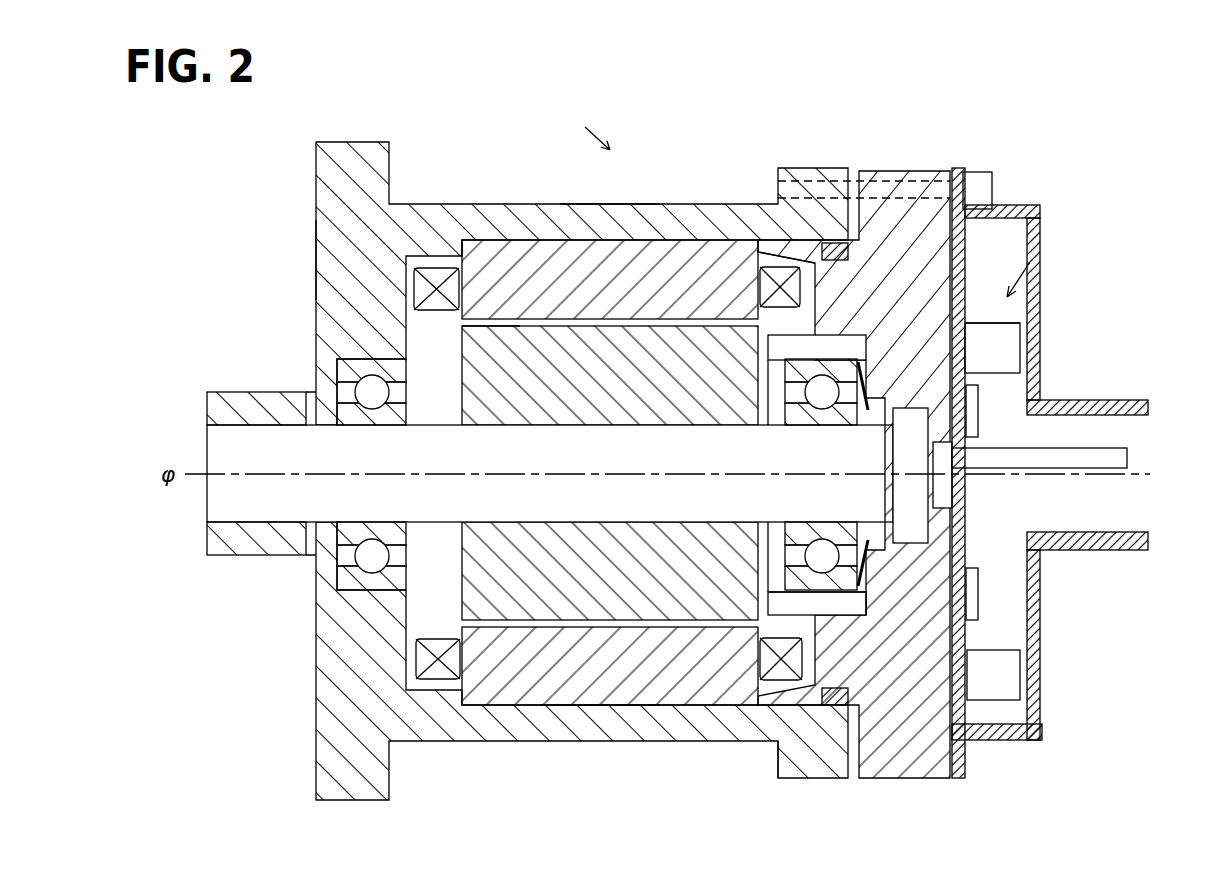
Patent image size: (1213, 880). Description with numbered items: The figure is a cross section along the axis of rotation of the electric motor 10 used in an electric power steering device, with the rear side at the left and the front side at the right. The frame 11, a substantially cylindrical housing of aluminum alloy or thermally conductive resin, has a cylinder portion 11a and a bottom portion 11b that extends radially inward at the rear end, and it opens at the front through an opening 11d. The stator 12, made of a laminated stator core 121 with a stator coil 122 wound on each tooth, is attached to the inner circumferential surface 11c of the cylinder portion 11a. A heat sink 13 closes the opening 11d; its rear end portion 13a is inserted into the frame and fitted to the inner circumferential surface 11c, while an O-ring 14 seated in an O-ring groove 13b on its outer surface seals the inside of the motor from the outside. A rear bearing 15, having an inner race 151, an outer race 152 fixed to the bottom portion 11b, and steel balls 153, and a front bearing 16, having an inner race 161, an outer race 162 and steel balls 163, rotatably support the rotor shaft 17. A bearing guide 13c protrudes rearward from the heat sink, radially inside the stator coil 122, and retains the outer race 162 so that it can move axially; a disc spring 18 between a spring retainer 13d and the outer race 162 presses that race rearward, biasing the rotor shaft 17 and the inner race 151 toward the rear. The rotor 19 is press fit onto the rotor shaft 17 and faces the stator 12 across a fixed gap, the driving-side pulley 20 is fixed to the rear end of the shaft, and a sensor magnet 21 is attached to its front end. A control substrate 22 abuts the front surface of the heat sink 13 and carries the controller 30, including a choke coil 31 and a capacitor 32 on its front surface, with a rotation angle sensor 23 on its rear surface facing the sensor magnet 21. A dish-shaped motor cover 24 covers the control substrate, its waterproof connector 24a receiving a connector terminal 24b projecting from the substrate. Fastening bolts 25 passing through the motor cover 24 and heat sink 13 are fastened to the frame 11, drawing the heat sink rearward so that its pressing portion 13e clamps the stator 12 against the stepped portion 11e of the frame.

The electric motor 10 is at (576, 132).
The frame 11 is at (710, 214).
The cylinder portion 11a is at (606, 213).
The bottom portion 11b is at (318, 257).
The inner circumferential surface 11c is at (592, 706).
The opening 11d is at (800, 712).
The stepped portion 11e is at (466, 250).
The stator 12 is at (663, 700).
The stator core 121 is at (515, 698).
The stator coil 122 is at (440, 682).
The heat sink 13 is at (934, 463).
The rear end portion 13a is at (802, 247).
The O-ring groove 13b is at (845, 705).
The bearing guide 13c is at (782, 340).
The spring retainer 13d is at (978, 400).
The pressing portion 13e is at (738, 700).
The O-ring 14 is at (846, 242).
The rear bearing 15 is at (282, 512).
The inner race 151 is at (345, 412).
The outer race 152 is at (345, 372).
The steel balls 153 is at (360, 570).
The front bearing 16 is at (1025, 489).
The inner race 161 is at (962, 565).
The outer race 162 is at (932, 620).
The steel balls 163 is at (828, 568).
The rotor shaft 17 is at (208, 455).
The disc spring 18 is at (958, 372).
The rotor 19 is at (467, 345).
The driving-side pulley 20 is at (208, 548).
The sensor magnet 21 is at (927, 528).
The control substrate 22 is at (1045, 735).
The rotation angle sensor 23 is at (1130, 452).
The motor cover 24 is at (1074, 478).
The waterproof connector 24a is at (1148, 548).
The connector terminal 24b is at (1130, 463).
The fastening bolts 25 is at (992, 190).
The controller 30 is at (1040, 252).
The choke coil 31 is at (1015, 682).
The capacitor 32 is at (1010, 335).